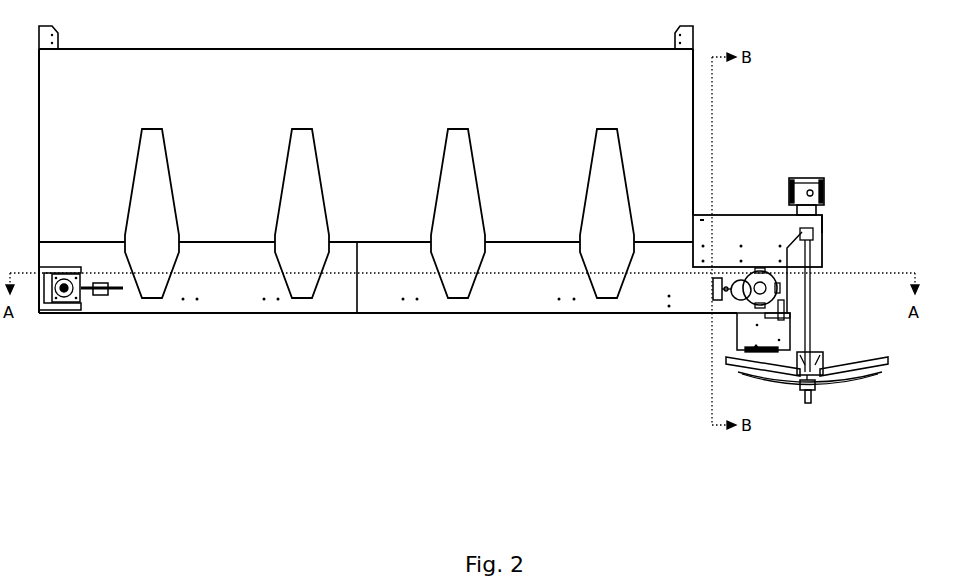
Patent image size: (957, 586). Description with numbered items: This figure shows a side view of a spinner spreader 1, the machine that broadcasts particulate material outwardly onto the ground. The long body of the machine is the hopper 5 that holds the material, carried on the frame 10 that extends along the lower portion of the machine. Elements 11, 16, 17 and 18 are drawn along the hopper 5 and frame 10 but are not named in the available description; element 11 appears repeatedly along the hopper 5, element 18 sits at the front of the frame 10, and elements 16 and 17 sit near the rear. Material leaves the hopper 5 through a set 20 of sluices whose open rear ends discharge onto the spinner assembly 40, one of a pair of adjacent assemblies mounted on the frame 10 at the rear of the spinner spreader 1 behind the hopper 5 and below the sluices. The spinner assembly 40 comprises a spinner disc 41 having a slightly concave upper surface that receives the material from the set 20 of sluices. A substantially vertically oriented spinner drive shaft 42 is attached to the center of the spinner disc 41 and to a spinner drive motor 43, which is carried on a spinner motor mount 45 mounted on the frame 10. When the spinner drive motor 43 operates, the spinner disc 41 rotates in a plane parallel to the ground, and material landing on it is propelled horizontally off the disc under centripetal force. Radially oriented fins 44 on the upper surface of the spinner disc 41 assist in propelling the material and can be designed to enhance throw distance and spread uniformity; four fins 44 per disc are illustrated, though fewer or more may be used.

The spinner spreader 1 is at (361, 383).
The hopper 5 is at (175, 60).
The frame 10 is at (218, 297).
The mixing paddle 11 is at (305, 289).
The drive gear 16 is at (760, 296).
The bearing 17 is at (741, 292).
The shaft bearing 18 is at (63, 300).
The set of sluices 20 is at (748, 325).
The spinner assembly 40 is at (870, 397).
The spinner disc 41 is at (828, 378).
The spinner drive shaft 42 is at (807, 254).
The spinner drive motor 43 is at (808, 178).
The fins 44 is at (862, 357).
The spinner motor mount 45 is at (812, 222).